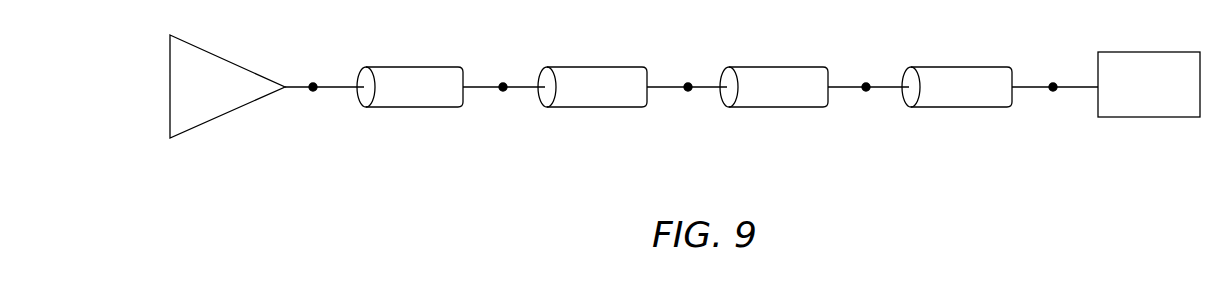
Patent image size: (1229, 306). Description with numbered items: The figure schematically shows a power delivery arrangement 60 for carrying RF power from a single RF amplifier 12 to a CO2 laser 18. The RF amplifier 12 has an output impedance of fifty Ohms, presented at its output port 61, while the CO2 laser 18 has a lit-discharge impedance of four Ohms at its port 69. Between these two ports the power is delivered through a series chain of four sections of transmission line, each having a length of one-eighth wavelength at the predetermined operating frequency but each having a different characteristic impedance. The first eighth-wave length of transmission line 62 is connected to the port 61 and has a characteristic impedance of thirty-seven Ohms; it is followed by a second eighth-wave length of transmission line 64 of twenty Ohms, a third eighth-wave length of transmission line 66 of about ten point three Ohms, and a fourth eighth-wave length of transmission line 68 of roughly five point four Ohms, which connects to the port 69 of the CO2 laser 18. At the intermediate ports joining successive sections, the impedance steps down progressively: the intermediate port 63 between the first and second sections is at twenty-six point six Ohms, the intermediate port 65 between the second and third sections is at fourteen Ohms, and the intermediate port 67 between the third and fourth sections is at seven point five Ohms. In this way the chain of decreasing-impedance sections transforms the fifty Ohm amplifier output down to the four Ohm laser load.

The RF amplifier 12 is at (220, 118).
The CO2 laser 18 is at (1162, 117).
The power delivery arrangement 60 is at (872, 188).
The port 61 is at (313, 87).
The eighth-wave length of transmission line 62 is at (412, 108).
The intermediate port 63 is at (503, 87).
The eighth-wave length of transmission line 64 is at (592, 107).
The intermediate port 65 is at (688, 87).
The eighth-wave length of transmission line 66 is at (780, 107).
The intermediate port 67 is at (866, 87).
The eighth-wave length of transmission line 68 is at (963, 107).
The port 69 is at (1053, 87).